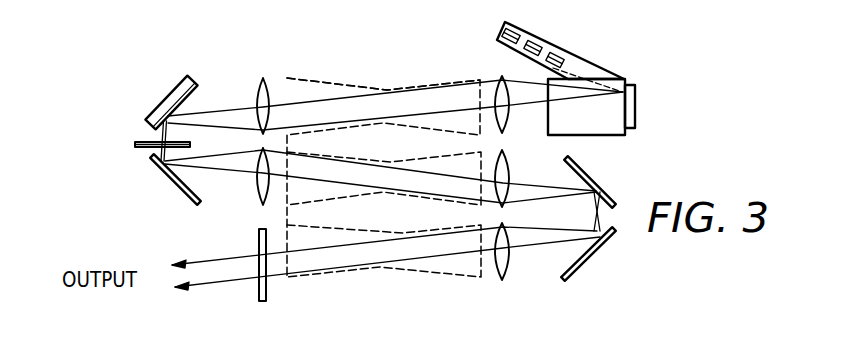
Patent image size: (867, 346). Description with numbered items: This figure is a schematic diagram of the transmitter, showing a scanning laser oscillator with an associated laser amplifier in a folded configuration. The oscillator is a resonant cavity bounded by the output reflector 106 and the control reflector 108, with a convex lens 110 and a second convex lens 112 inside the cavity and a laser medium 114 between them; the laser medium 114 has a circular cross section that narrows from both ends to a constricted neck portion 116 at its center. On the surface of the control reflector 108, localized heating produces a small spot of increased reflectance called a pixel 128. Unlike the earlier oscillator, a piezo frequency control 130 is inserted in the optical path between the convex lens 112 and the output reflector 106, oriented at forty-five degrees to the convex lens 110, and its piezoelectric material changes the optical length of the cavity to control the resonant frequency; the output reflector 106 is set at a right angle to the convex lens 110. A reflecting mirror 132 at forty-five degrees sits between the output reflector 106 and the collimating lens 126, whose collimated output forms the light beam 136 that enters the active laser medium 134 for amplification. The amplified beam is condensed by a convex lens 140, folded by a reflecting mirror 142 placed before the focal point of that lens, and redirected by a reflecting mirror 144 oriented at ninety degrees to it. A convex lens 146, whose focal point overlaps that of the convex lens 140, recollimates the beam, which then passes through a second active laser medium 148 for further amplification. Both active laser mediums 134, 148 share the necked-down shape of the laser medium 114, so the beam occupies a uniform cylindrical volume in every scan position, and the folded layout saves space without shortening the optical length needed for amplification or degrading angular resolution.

The output reflector 106 is at (148, 142).
The control reflector 108 is at (617, 80).
The convex lens 110 is at (262, 83).
The second convex lens 112 is at (500, 78).
The laser medium 114 is at (305, 78).
The constricted neck portion 116 is at (387, 90).
The collimating lens 126 is at (259, 186).
The pixel 128 is at (627, 93).
The piezo frequency control 130 is at (203, 82).
The reflecting mirror 132 is at (168, 164).
The active laser medium 134 is at (402, 160).
The light beam 136 is at (288, 199).
The convex lens 140 is at (503, 160).
The reflecting mirror 142 is at (588, 172).
The reflecting mirror 144 is at (592, 250).
The convex lens 146 is at (508, 262).
The active laser medium 148 is at (402, 232).